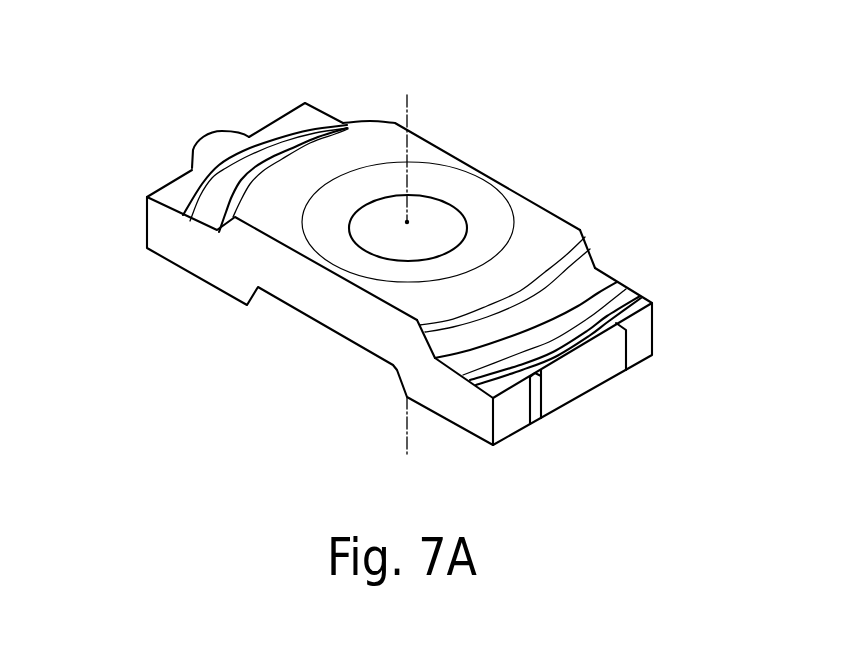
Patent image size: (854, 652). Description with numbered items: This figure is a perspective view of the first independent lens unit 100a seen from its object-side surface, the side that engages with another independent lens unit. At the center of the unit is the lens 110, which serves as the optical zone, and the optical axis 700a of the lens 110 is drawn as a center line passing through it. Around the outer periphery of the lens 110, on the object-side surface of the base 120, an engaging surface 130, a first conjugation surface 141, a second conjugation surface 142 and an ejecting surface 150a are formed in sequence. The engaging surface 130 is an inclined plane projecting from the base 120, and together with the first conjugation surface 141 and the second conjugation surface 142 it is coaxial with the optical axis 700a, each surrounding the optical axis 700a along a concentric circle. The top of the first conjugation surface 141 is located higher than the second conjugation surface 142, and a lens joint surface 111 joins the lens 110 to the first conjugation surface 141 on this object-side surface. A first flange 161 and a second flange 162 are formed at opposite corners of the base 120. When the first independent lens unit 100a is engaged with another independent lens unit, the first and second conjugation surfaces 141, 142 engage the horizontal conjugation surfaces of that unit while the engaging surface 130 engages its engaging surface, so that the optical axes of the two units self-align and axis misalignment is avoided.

The first independent lens unit 100a is at (105, 45).
The lens 110 is at (437, 233).
The lens joint surface 111 is at (443, 182).
The base 120 is at (235, 270).
The engaging surface 130 is at (585, 263).
The first conjugation surface 141 is at (515, 240).
The second conjugation surface 142 is at (585, 307).
The ejecting surface 150a is at (302, 121).
The first flange 161 is at (215, 148).
The second flange 162 is at (580, 377).
The optical axis 700a is at (414, 255).